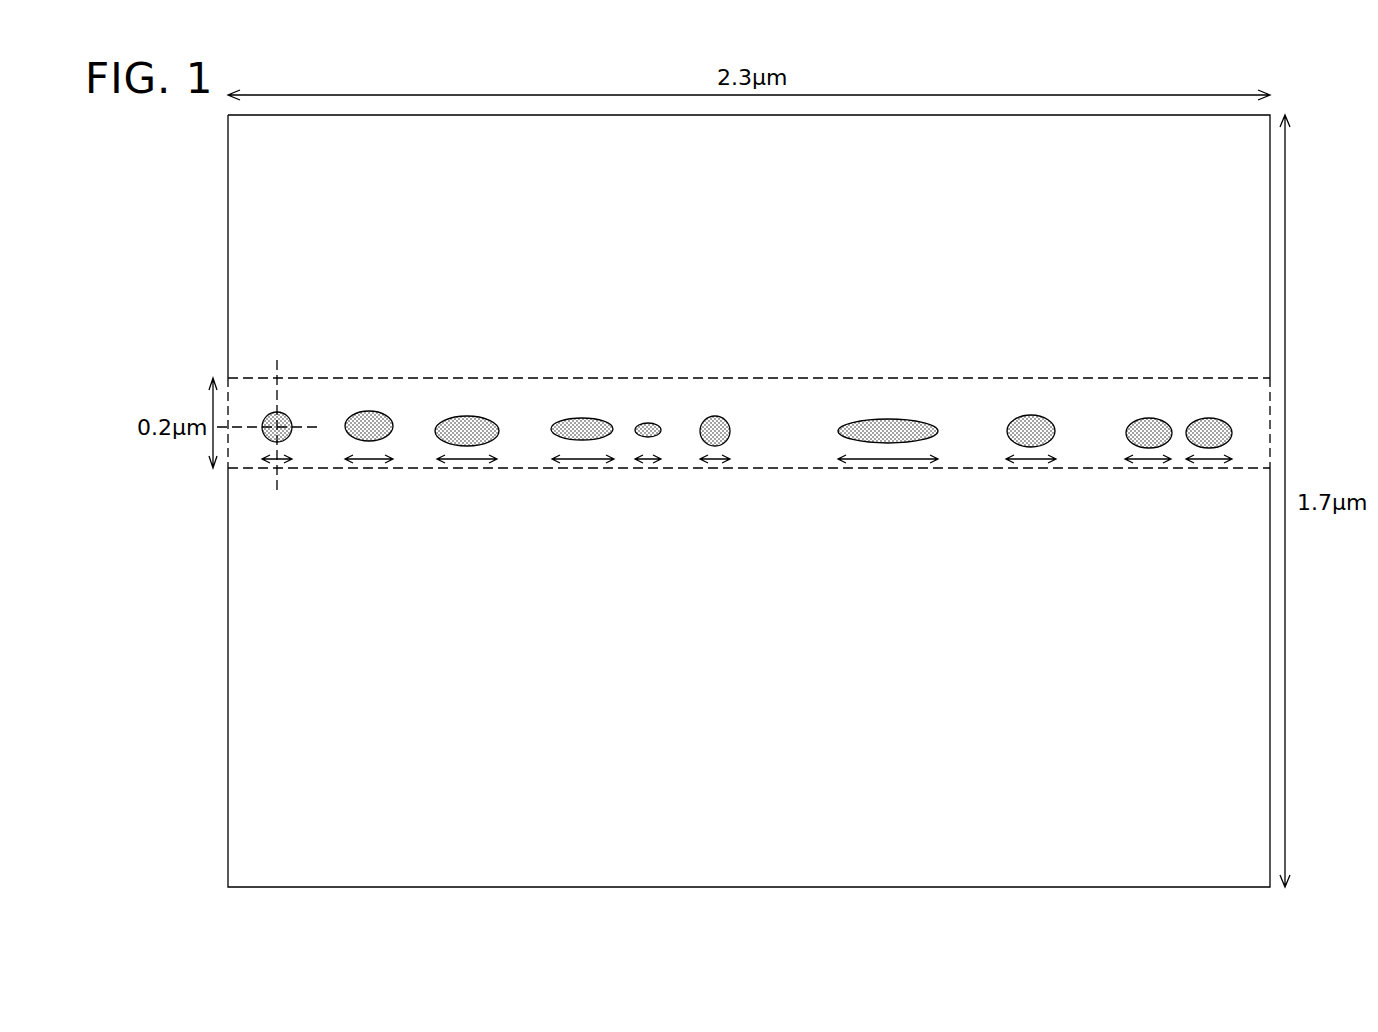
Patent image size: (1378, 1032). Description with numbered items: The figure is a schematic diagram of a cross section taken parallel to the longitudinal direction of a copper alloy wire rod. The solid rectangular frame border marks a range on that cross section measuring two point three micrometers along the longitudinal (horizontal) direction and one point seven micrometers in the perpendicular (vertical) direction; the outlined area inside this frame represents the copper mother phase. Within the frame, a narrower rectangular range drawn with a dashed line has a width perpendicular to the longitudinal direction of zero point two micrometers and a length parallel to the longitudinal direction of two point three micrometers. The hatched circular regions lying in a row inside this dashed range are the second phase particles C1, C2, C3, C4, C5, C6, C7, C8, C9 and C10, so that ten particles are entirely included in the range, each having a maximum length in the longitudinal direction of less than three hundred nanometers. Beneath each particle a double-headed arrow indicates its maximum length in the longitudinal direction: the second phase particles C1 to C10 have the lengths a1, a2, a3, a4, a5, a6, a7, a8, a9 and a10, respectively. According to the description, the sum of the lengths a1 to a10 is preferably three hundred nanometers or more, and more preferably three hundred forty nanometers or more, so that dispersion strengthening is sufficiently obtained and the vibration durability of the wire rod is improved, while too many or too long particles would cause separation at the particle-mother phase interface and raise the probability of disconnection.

The second phase particle C1 is at (285, 413).
The second phase particle C2 is at (377, 412).
The second phase particle C3 is at (475, 417).
The second phase particle C4 is at (590, 419).
The second phase particle C5 is at (656, 424).
The second phase particle C6 is at (723, 417).
The second phase particle C7 is at (896, 420).
The second phase particle C8 is at (1039, 416).
The second phase particle C9 is at (1157, 419).
The second phase particle C10 is at (1217, 419).
The length a1 is at (277, 485).
The length a2 is at (369, 485).
The length a3 is at (467, 485).
The length a4 is at (583, 485).
The length a5 is at (648, 485).
The length a6 is at (715, 485).
The length a7 is at (888, 485).
The length a8 is at (1031, 485).
The length a9 is at (1148, 485).
The length a10 is at (1209, 485).